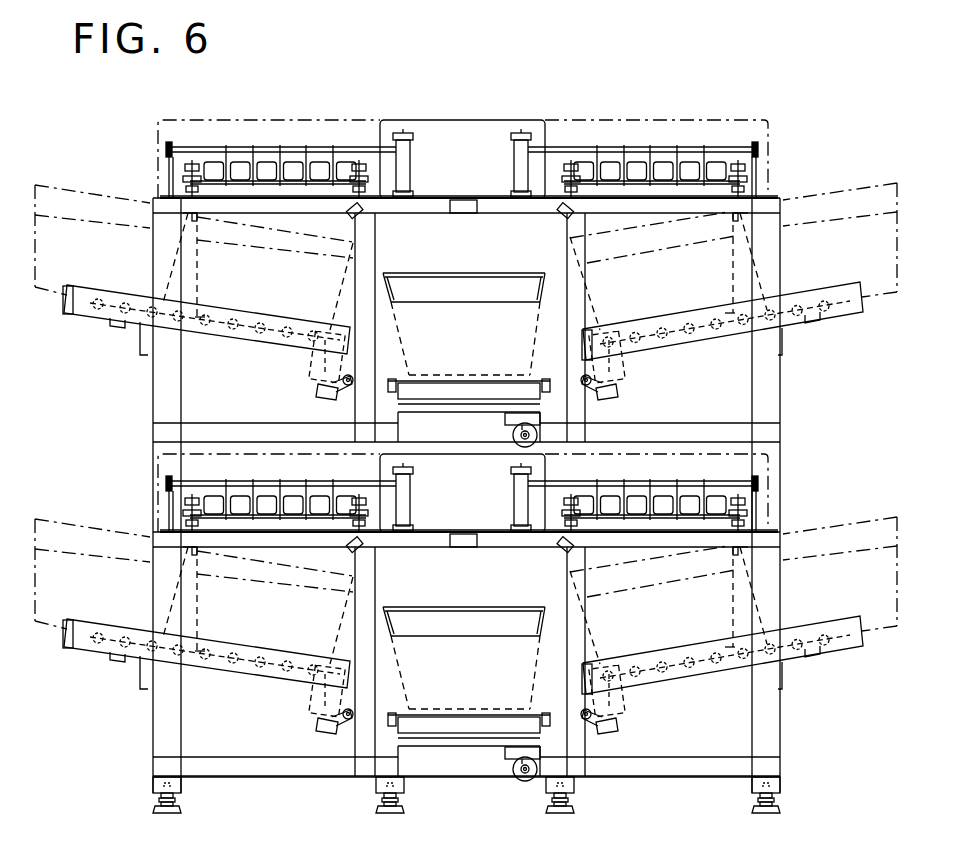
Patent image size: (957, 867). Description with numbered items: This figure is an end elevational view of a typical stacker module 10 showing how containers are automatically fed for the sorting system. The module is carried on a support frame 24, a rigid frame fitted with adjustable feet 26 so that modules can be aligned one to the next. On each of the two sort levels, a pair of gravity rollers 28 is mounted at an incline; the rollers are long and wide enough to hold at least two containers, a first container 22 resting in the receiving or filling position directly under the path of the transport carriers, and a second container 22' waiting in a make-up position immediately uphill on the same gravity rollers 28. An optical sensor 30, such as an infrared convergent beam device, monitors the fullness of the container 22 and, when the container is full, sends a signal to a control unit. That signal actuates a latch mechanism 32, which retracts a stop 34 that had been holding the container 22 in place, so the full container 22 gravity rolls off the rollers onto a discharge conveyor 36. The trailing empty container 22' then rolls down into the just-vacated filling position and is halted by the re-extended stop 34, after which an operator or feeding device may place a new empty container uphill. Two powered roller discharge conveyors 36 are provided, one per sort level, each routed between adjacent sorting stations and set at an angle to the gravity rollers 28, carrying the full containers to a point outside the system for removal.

The stacker module 10 is at (255, 120).
The container 22 is at (503, 391).
The container in make-up position 22' is at (466, 375).
The support frame 24 is at (168, 710).
The adjustable feet 26 is at (380, 810).
The gravity rollers 28 is at (113, 311).
The optical sensor 30 is at (563, 217).
The latch mechanism 32 is at (318, 392).
The stop 34 is at (330, 351).
The discharge conveyor 36 is at (486, 388).